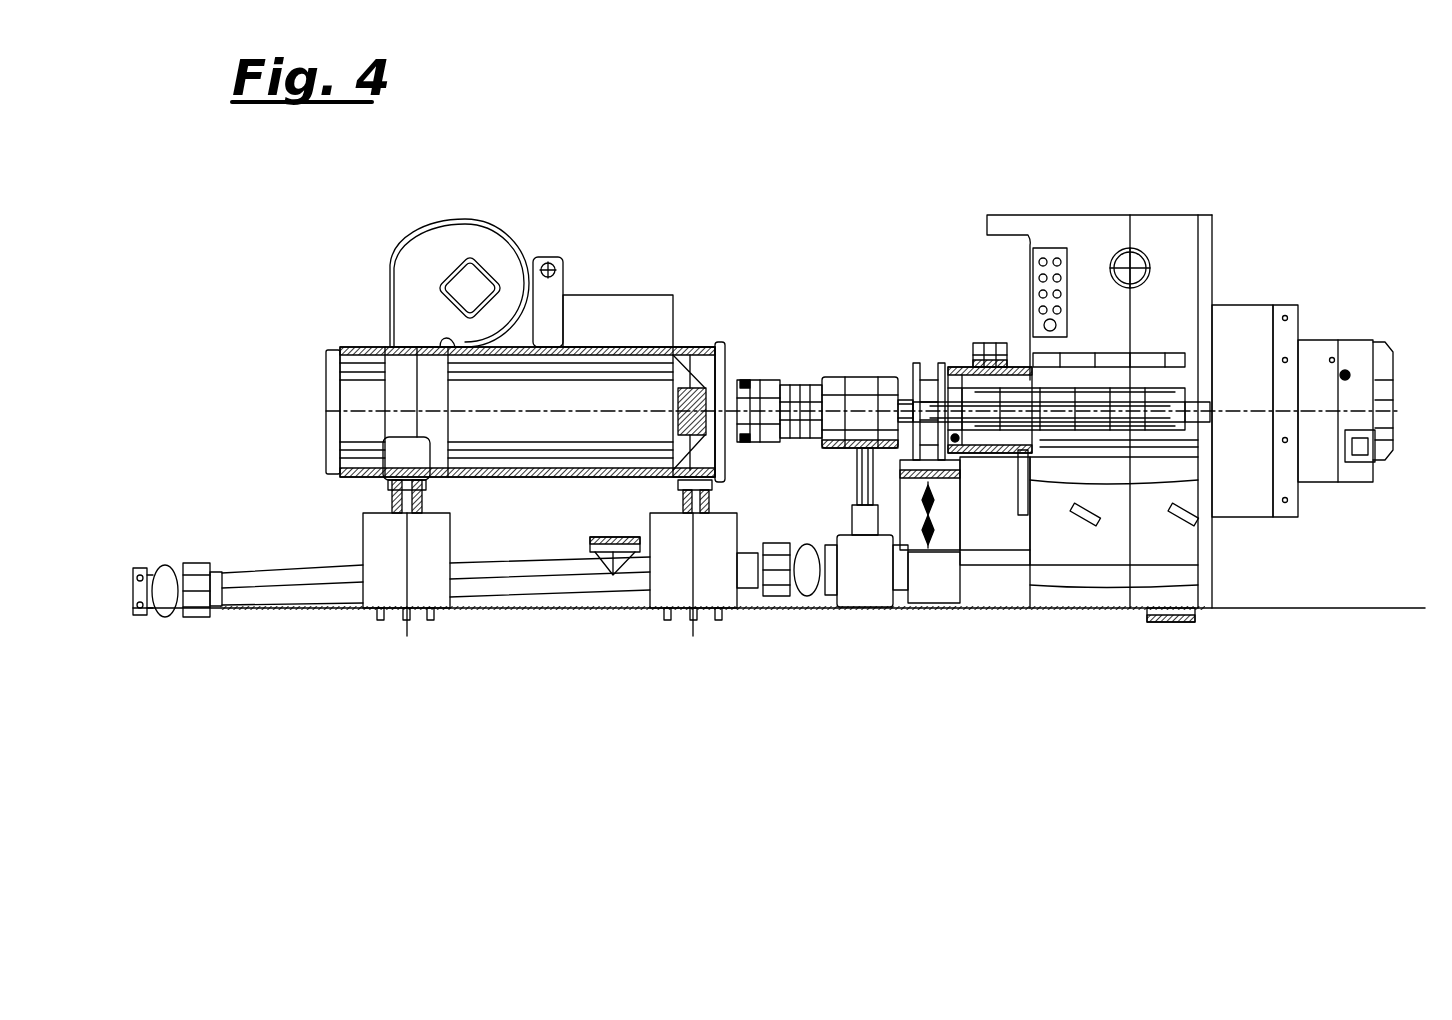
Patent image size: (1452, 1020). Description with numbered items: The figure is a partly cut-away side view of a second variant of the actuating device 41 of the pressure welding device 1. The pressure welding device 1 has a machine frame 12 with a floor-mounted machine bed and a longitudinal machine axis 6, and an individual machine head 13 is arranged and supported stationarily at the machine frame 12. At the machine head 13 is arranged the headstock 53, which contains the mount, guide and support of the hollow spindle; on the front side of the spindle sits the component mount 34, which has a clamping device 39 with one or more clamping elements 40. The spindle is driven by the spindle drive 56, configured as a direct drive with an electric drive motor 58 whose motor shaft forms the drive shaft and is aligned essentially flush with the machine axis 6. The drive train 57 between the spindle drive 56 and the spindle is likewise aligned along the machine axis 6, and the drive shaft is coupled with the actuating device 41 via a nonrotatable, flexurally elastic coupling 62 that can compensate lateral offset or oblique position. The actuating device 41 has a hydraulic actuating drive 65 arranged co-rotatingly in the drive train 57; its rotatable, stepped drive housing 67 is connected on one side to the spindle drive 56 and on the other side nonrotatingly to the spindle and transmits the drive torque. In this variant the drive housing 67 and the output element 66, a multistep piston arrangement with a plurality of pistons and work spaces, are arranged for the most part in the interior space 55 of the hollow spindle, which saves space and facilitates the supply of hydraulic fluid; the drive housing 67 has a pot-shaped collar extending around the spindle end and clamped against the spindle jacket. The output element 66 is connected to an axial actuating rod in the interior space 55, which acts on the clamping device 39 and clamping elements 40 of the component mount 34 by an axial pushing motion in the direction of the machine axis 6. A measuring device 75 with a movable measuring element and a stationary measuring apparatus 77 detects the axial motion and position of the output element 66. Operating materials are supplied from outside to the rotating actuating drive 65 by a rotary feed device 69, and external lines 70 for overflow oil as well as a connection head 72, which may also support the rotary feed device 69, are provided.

The pressure welding device 1 is at (1346, 190).
The machine axis 6 is at (1253, 412).
The machine frame 12 is at (1280, 680).
The machine head 13 is at (1080, 230).
The component mount 34 is at (1370, 403).
The clamping device 39 is at (1355, 358).
The clamping element 40 is at (1387, 362).
The actuating device 41 is at (880, 325).
The headstock 53 is at (1243, 330).
The interior space 55 is at (1128, 400).
The spindle drive 56 is at (512, 321).
The drive train 57 is at (745, 372).
The electric drive motor 58 is at (362, 392).
The coupling 62 is at (790, 382).
The actuating drive 65 is at (962, 362).
The output element 66 is at (1077, 400).
The drive housing 67 is at (988, 352).
The rotary feed device 69 is at (845, 377).
The external lines 70 is at (563, 583).
The connection head 72 is at (866, 590).
The measuring device 75 is at (918, 362).
The measuring apparatus 77 is at (938, 470).